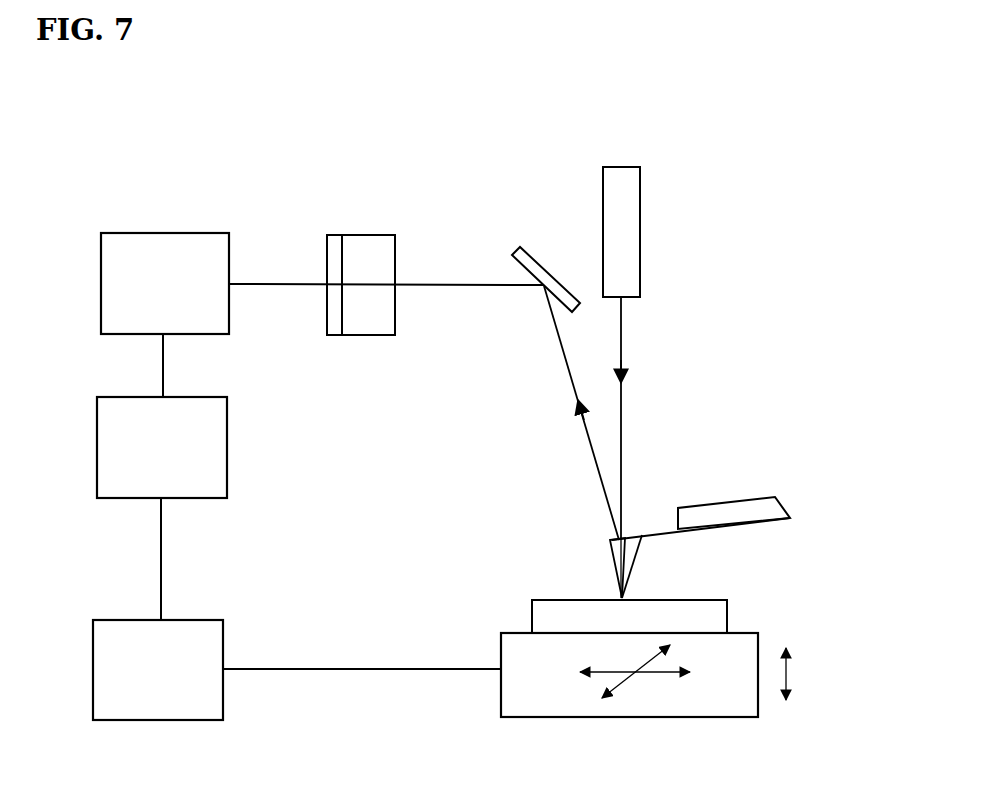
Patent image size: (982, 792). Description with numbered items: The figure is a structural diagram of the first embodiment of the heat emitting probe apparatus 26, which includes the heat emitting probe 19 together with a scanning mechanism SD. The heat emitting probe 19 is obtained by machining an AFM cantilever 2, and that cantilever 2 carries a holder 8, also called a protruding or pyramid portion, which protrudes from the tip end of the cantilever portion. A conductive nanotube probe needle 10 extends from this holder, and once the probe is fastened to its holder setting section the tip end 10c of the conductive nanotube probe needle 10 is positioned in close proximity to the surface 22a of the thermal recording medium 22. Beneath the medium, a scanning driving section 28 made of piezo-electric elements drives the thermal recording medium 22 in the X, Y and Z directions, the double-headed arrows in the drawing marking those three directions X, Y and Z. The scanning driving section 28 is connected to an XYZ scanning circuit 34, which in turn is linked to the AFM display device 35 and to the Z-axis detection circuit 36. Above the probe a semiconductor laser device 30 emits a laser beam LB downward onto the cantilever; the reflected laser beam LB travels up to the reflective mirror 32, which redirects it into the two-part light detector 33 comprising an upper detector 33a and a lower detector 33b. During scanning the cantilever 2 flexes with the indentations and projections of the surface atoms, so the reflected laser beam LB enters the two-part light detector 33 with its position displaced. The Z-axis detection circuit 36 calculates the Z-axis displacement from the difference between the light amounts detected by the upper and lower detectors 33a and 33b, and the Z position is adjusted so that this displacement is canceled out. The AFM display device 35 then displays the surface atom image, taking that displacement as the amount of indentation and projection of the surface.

The AFM cantilever 2 is at (650, 526).
The holder 8 is at (608, 557).
The conductive nanotube probe needle 10 is at (623, 568).
The tip end 10c is at (623, 597).
The heat emitting probe 19 is at (724, 487).
The thermal recording medium 22 is at (727, 615).
The surface 22a is at (580, 598).
The heat emitting probe apparatus 26 is at (492, 170).
The scanning driving section 28 is at (651, 705).
The semiconductor laser device 30 is at (625, 242).
The reflective mirror 32 is at (545, 270).
The two-part light detector 33 is at (363, 250).
The upper detector 33a is at (373, 268).
The lower detector 33b is at (373, 325).
The XYZ scanning circuit 34 is at (158, 670).
The AFM display device 35 is at (162, 447).
The Z-axis detection circuit 36 is at (165, 283).
The laser beam LB is at (625, 398).
The scanning mechanism SD is at (282, 483).
The X direction X is at (645, 690).
The Y direction Y is at (647, 664).
The Z direction Z is at (802, 674).